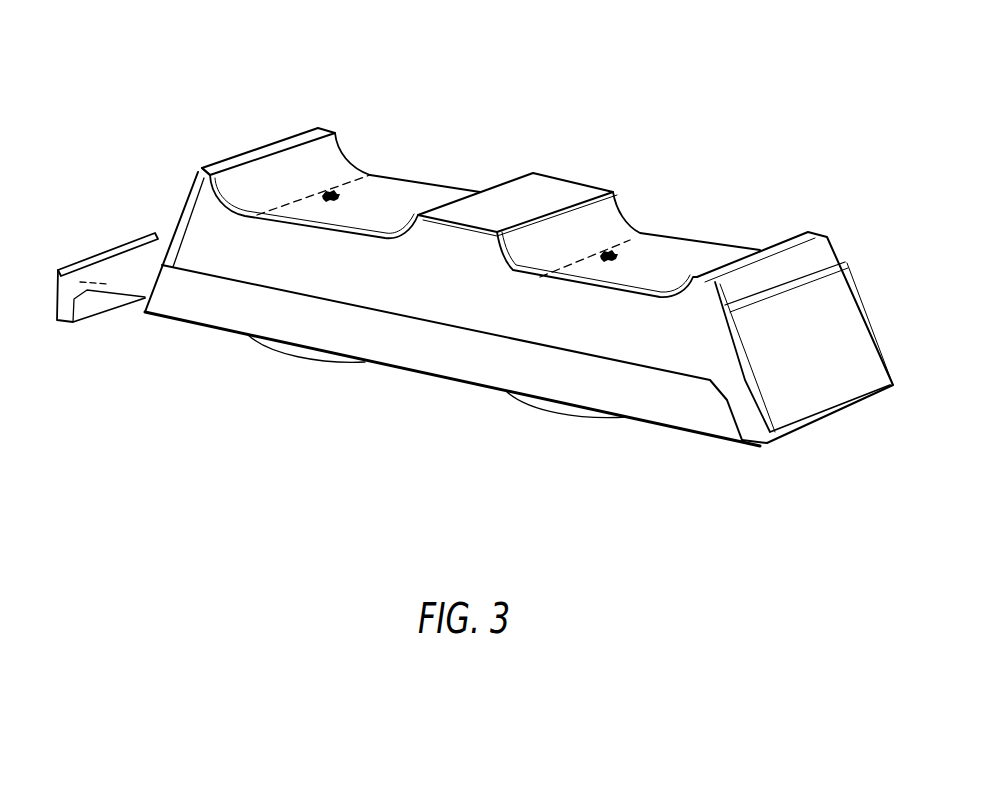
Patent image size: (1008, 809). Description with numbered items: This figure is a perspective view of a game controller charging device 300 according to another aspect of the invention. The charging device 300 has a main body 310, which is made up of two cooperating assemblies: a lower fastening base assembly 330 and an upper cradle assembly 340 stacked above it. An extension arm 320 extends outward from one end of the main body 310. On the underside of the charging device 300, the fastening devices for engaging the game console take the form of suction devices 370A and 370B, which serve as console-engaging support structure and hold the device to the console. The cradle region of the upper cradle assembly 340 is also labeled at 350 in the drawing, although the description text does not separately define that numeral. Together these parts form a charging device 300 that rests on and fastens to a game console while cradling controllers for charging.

The charging device 300 is at (475, 247).
The main body 310 is at (203, 247).
The extension arm 320 is at (118, 243).
The lower fastening base assembly 330 is at (232, 323).
The upper cradle assembly 340 is at (442, 300).
The recess 350 is at (650, 253).
The suction device 370A is at (302, 352).
The suction device 370B is at (558, 405).